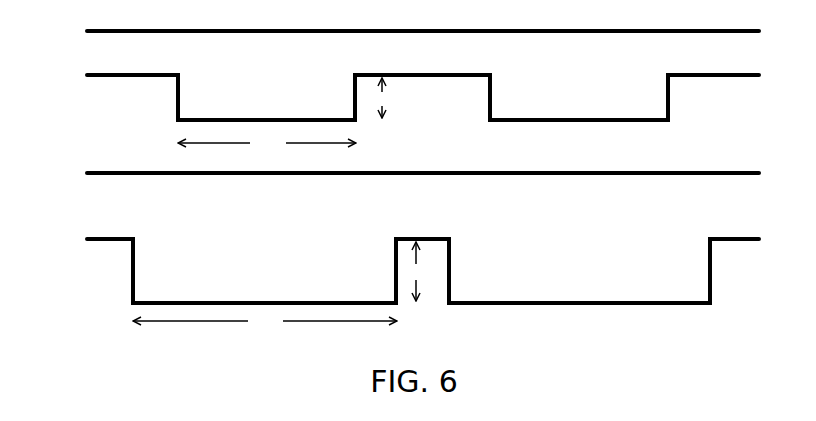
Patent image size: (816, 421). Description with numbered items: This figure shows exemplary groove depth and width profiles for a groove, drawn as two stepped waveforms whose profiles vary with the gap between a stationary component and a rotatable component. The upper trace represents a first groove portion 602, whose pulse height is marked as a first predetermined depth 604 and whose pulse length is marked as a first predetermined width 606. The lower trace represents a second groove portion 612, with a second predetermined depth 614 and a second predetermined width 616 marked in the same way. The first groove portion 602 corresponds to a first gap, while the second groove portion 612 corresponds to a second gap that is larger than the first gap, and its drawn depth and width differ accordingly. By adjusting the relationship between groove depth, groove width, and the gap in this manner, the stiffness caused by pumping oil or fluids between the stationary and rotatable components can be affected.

The first groove portion 602 is at (137, 53).
The first predetermined depth 604 is at (382, 98).
The first predetermined width 606 is at (267, 143).
The second groove portion 612 is at (126, 207).
The second predetermined depth 614 is at (416, 271).
The second predetermined width 616 is at (265, 321).